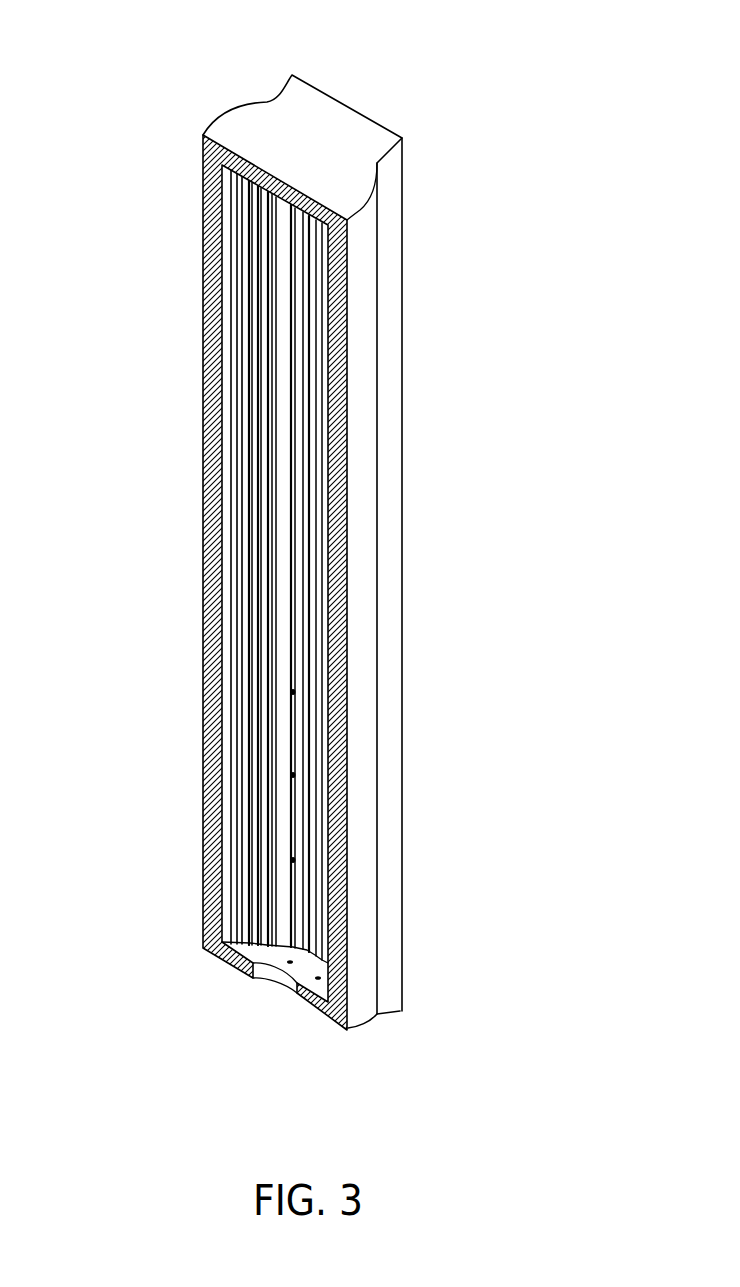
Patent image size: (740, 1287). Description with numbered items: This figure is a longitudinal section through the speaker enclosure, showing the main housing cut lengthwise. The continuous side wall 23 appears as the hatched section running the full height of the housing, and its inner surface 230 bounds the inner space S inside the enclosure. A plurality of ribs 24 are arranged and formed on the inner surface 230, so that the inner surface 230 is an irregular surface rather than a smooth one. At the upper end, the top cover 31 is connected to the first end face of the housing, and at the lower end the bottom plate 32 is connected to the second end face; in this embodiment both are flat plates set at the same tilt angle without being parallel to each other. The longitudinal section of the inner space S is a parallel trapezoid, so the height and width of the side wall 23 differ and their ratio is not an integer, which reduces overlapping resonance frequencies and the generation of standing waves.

The continuous side wall 23 is at (207, 182).
The inner surface 230 is at (237, 267).
The ribs 24 is at (243, 622).
The top cover 31 is at (348, 102).
The bottom plate 32 is at (323, 1019).
The inner space S is at (122, 488).